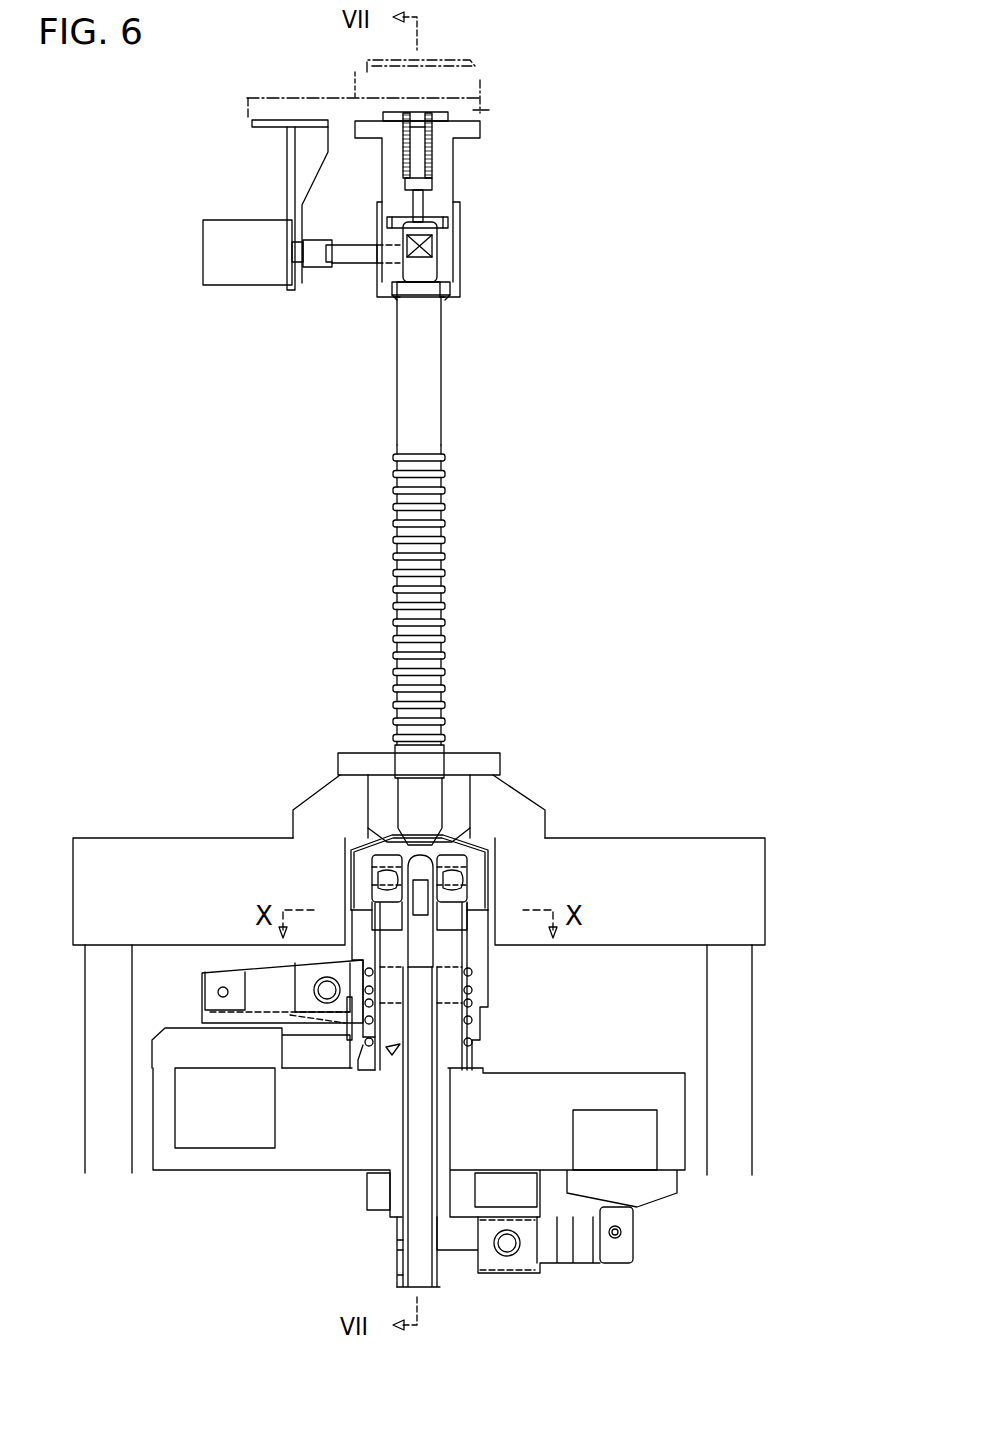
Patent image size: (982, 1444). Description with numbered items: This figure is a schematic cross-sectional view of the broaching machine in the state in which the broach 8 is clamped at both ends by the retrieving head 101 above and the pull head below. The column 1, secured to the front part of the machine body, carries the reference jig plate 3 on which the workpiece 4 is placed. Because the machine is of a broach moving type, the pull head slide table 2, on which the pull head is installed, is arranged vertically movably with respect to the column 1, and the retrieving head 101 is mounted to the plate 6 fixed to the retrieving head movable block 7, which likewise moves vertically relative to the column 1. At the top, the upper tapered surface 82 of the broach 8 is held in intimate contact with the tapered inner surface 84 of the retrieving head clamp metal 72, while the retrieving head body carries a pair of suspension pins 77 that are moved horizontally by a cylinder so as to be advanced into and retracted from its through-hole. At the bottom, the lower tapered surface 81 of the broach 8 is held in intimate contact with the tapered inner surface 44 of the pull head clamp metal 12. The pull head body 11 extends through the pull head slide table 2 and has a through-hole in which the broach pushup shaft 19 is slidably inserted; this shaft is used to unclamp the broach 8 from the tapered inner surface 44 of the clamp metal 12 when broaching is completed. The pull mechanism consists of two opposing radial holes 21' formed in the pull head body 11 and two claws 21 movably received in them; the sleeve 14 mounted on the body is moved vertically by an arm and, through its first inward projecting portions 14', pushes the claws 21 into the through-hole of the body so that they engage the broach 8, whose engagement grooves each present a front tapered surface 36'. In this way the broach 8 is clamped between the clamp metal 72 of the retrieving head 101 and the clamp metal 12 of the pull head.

The column 1 is at (690, 832).
The pull head slide table 2 is at (688, 1180).
The reference jig plate 3 is at (520, 815).
The workpiece 4 is at (473, 762).
The plate 6 is at (490, 113).
The retrieving head movable block 7 is at (470, 64).
The broach 8 is at (452, 484).
The pull head body 11 is at (372, 1070).
The pull head clamp metal 12 is at (378, 837).
The sleeve 14 is at (328, 854).
The first inward projecting portions 14' is at (451, 995).
The broach pushup shaft 19 is at (397, 1280).
The claws 21 is at (459, 898).
The radial holes 21' is at (375, 962).
The front tapered surface 36' is at (330, 912).
The tapered inner surface 44 is at (417, 847).
The retrieving head clamp metal 72 is at (453, 293).
The suspension pins 77 is at (353, 258).
The lower tapered surface 81 is at (448, 842).
The upper tapered surface 82 is at (393, 294).
The tapered inner surface 84 is at (436, 291).
The retrieving head 101 is at (474, 253).